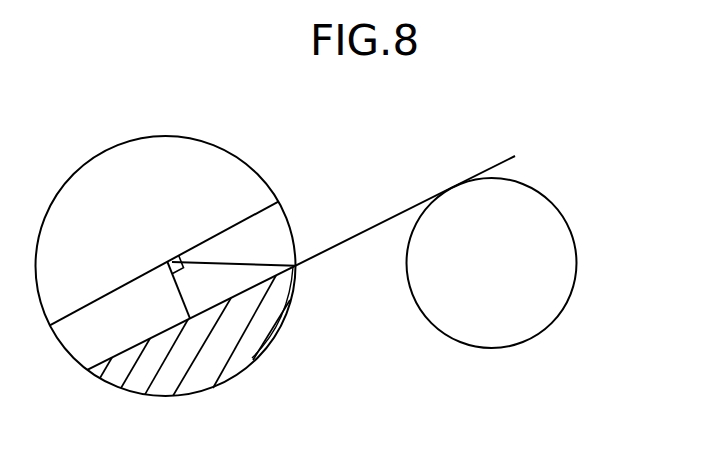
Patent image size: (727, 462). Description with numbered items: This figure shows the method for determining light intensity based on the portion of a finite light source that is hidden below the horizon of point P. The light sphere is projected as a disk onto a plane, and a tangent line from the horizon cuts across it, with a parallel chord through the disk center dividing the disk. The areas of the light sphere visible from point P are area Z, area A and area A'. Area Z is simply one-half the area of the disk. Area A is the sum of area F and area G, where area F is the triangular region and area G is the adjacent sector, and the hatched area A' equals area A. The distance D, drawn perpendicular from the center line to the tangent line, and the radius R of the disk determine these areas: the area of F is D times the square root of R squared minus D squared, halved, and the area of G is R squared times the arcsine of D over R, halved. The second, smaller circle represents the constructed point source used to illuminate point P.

The area Z is at (166, 266).
The radius of the light sphere R is at (205, 252).
The area G is at (234, 246).
The area F is at (187, 290).
The distance D is at (168, 283).
The area A' is at (196, 331).
The area A is at (331, 243).